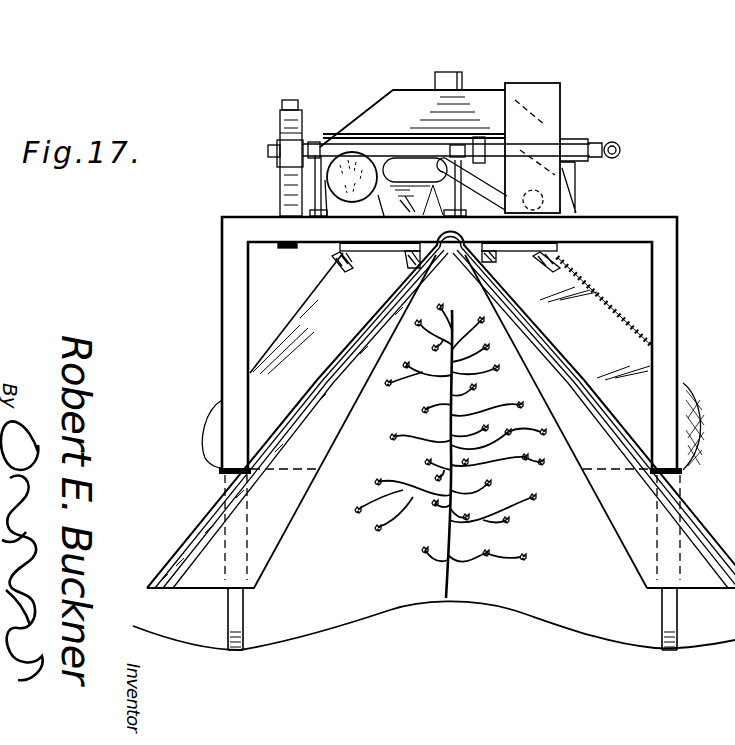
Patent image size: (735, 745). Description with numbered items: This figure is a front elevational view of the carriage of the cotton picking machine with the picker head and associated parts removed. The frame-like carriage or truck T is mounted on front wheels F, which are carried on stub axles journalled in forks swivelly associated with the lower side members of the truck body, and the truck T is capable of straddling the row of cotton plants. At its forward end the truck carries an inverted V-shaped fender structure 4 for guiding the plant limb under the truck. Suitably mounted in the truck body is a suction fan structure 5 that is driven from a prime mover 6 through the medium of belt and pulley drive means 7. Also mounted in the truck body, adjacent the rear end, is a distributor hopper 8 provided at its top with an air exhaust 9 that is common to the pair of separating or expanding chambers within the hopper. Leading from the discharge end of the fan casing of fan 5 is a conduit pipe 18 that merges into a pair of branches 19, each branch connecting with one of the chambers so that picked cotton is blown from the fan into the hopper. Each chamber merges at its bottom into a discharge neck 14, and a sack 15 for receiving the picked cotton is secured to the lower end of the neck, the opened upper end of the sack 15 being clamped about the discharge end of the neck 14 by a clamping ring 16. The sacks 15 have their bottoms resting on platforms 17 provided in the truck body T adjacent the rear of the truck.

The carriage or truck T is at (222, 228).
The inverted V-shaped fender structure 4 is at (198, 547).
The suction fan structure 5 is at (552, 83).
The prime mover 6 is at (338, 158).
The belt and pulley drive means 7 is at (284, 112).
The distributor hopper 8 is at (374, 104).
The air exhaust 9 is at (450, 72).
The discharge neck 14 is at (408, 205).
The sack 15 is at (308, 308).
The clamping ring 16 is at (340, 258).
The platform 17 is at (222, 470).
The conduit pipe 18 is at (497, 183).
The branches 19 is at (395, 160).
The front wheels F is at (233, 652).